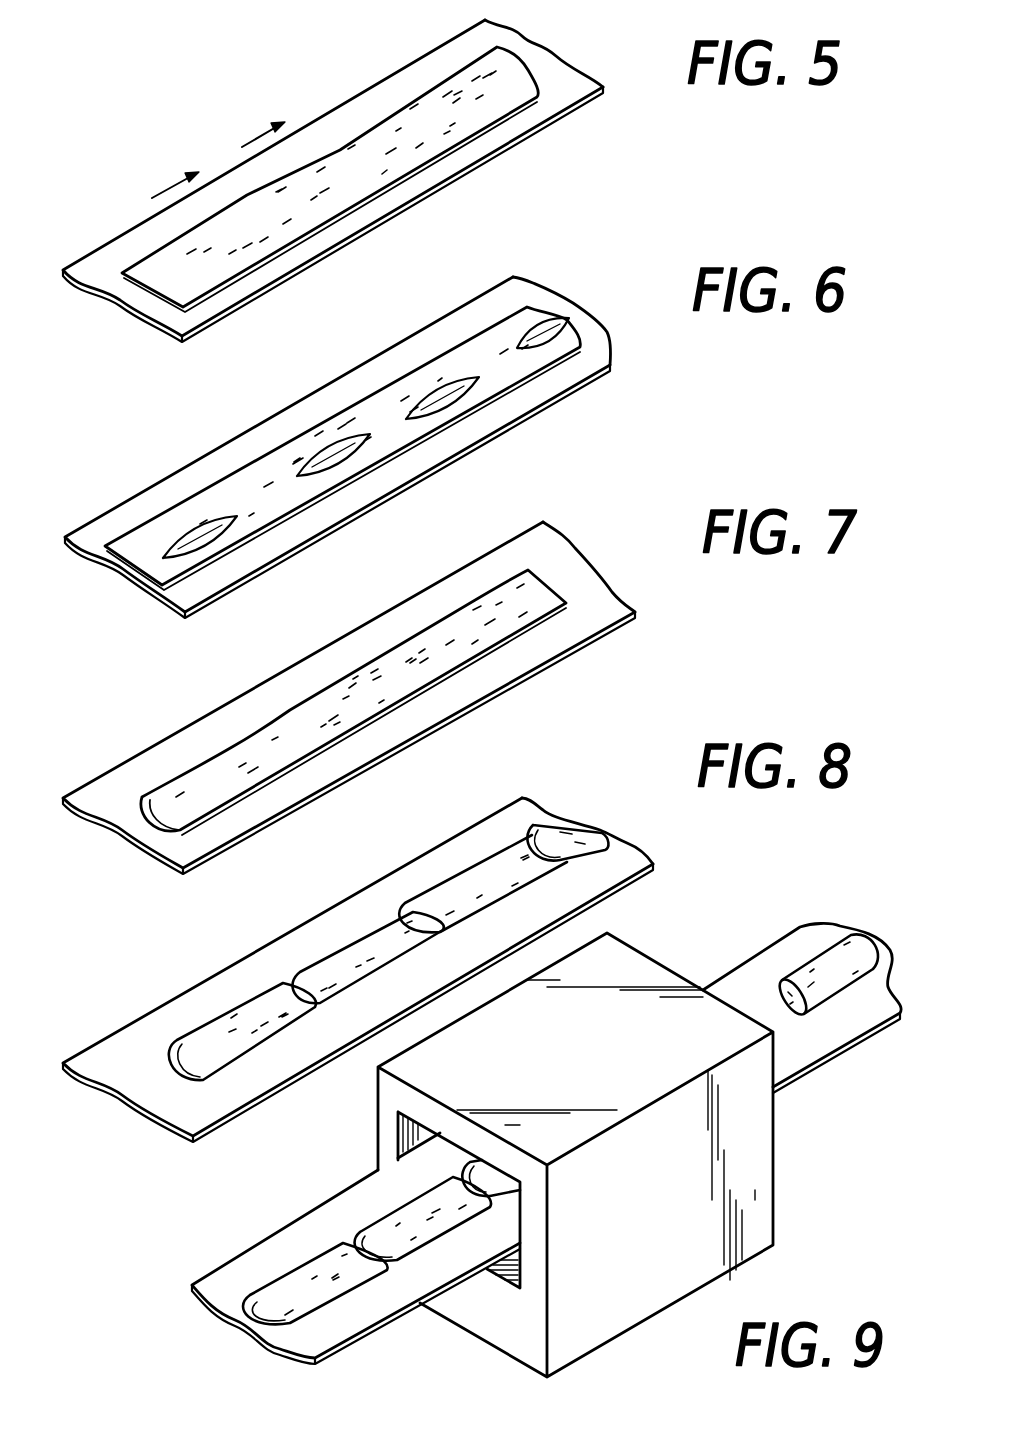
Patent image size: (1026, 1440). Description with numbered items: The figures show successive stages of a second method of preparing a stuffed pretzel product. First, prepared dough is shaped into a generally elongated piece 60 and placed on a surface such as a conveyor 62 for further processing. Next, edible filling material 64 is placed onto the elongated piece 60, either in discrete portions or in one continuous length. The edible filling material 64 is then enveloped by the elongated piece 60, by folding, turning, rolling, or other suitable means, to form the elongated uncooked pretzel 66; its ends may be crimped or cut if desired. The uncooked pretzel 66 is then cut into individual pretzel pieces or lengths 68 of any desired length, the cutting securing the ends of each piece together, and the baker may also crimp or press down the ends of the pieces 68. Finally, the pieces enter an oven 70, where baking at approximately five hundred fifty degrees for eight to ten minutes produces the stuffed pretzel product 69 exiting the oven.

In FIG. 5, the elongated piece 60 is at (523, 92).
In FIG. 6, the elongated piece 60 is at (205, 490).
In FIG. 5, the conveyor 62 is at (492, 143).
In FIG. 6, the conveyor 62 is at (207, 575).
In FIG. 6, the edible filling material 64 is at (455, 392).
In FIG. 7, the elongated uncooked pretzel 66 is at (495, 625).
In FIG. 8, the individual pretzel pieces 68 is at (297, 975).
In FIG. 9, the individual pretzel pieces 68 is at (393, 1217).
In FIG. 9, the stuffed pretzel product 69 is at (823, 960).
In FIG. 9, the oven 70 is at (682, 1196).